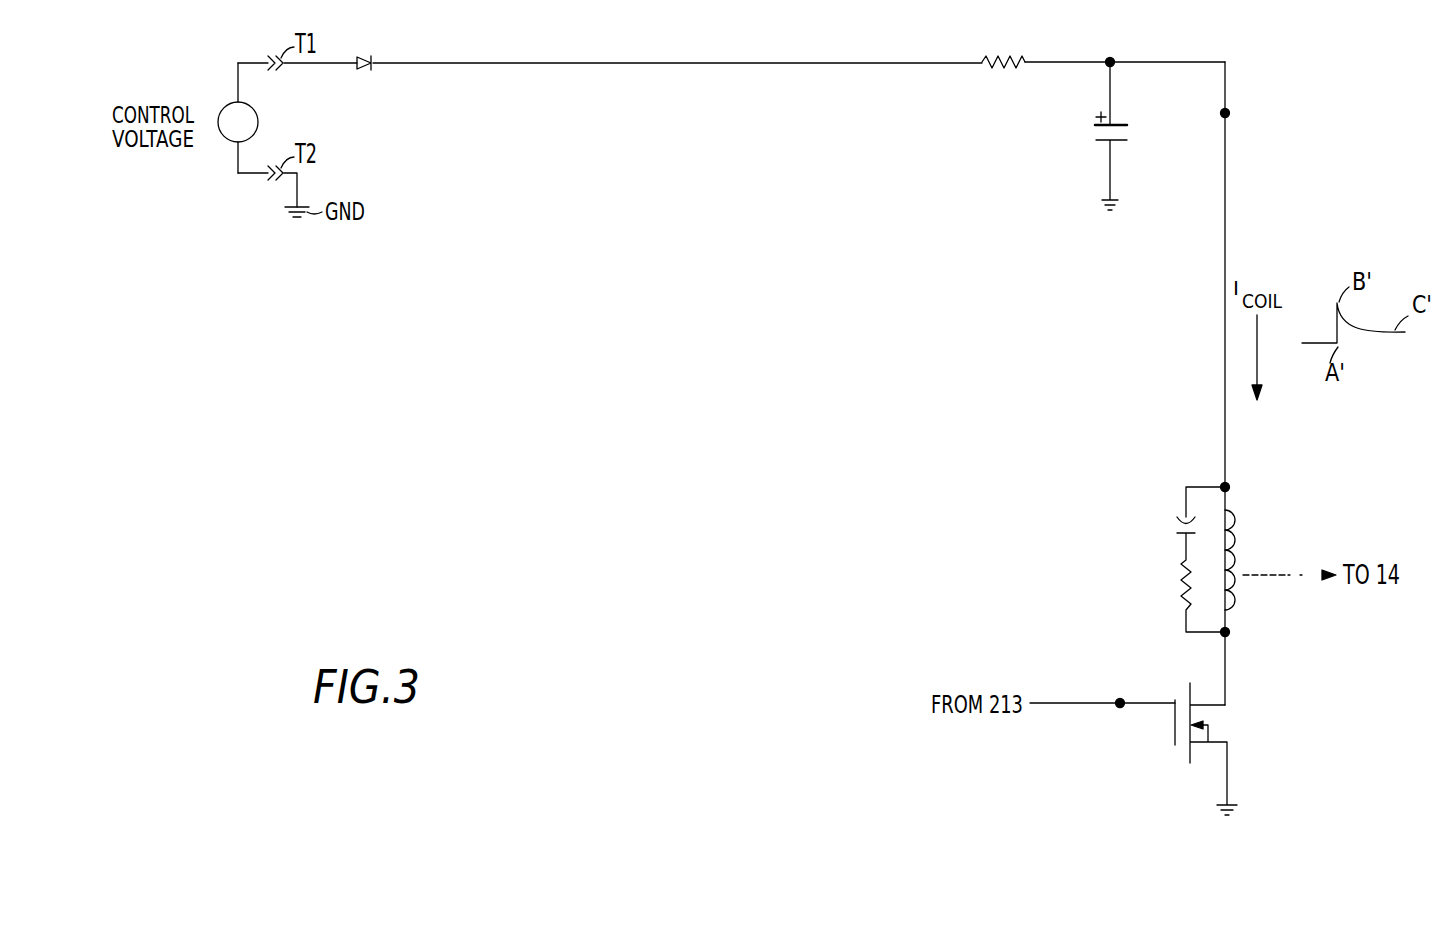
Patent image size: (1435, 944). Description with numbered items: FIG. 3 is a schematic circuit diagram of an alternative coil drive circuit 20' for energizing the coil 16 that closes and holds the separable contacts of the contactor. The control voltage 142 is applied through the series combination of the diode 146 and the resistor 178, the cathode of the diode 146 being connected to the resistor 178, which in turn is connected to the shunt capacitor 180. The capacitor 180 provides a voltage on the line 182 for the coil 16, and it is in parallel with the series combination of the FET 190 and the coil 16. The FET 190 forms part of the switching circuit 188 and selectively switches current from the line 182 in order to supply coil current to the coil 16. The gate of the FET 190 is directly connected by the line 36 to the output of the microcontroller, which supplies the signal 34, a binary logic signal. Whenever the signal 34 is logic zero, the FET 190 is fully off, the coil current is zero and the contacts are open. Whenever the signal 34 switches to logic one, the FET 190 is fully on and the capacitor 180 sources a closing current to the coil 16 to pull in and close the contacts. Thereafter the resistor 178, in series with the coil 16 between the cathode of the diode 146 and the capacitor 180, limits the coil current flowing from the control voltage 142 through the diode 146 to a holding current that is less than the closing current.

The control voltage 142 is at (258, 122).
The diode 146 is at (372, 57).
The resistor 178 is at (1001, 68).
The shunt capacitor 180 is at (1093, 142).
The line 182 is at (1231, 113).
The coil 16 is at (1236, 520).
The signal 34 is at (1077, 703).
The line 36 is at (1119, 710).
The FET 190 is at (1218, 741).
The switching circuit 188 is at (1164, 792).
The alternative coil drive circuit 20' is at (1282, 645).